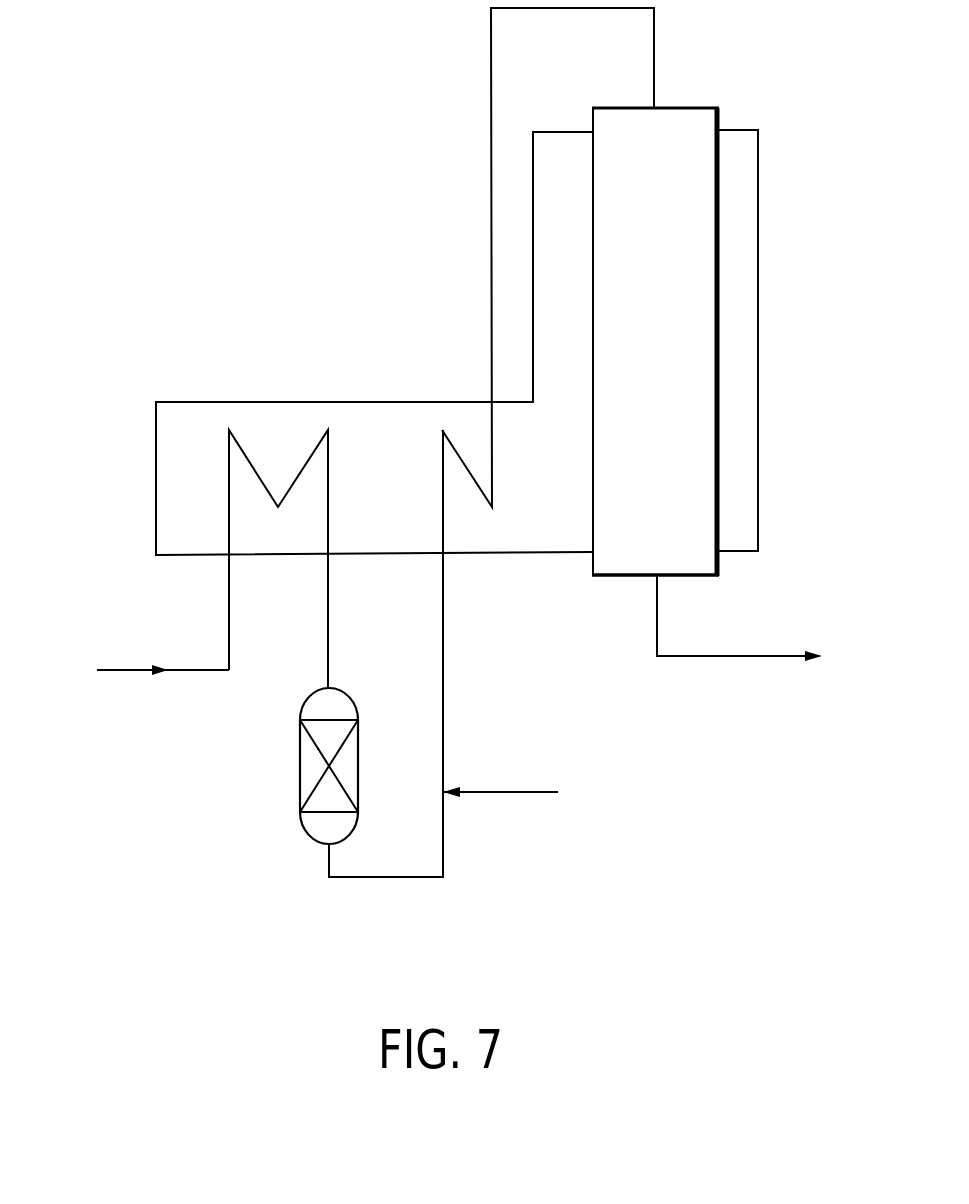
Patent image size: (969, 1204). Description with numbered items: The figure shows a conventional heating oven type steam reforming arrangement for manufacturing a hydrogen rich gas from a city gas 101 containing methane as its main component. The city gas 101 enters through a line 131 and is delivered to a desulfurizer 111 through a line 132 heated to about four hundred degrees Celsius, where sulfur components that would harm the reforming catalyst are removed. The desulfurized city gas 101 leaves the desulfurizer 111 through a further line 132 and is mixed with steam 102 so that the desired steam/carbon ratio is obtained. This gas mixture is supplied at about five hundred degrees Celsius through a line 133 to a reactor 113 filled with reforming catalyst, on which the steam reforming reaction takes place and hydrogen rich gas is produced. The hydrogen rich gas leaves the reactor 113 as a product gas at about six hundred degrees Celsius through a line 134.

The city gas 101 is at (138, 672).
The steam 102 is at (525, 791).
The desulfurizer 111 is at (300, 769).
The reactor 113 is at (695, 108).
The line 131 is at (229, 610).
The line 132 is at (759, 232).
The line 133 is at (491, 212).
The line 134 is at (733, 656).